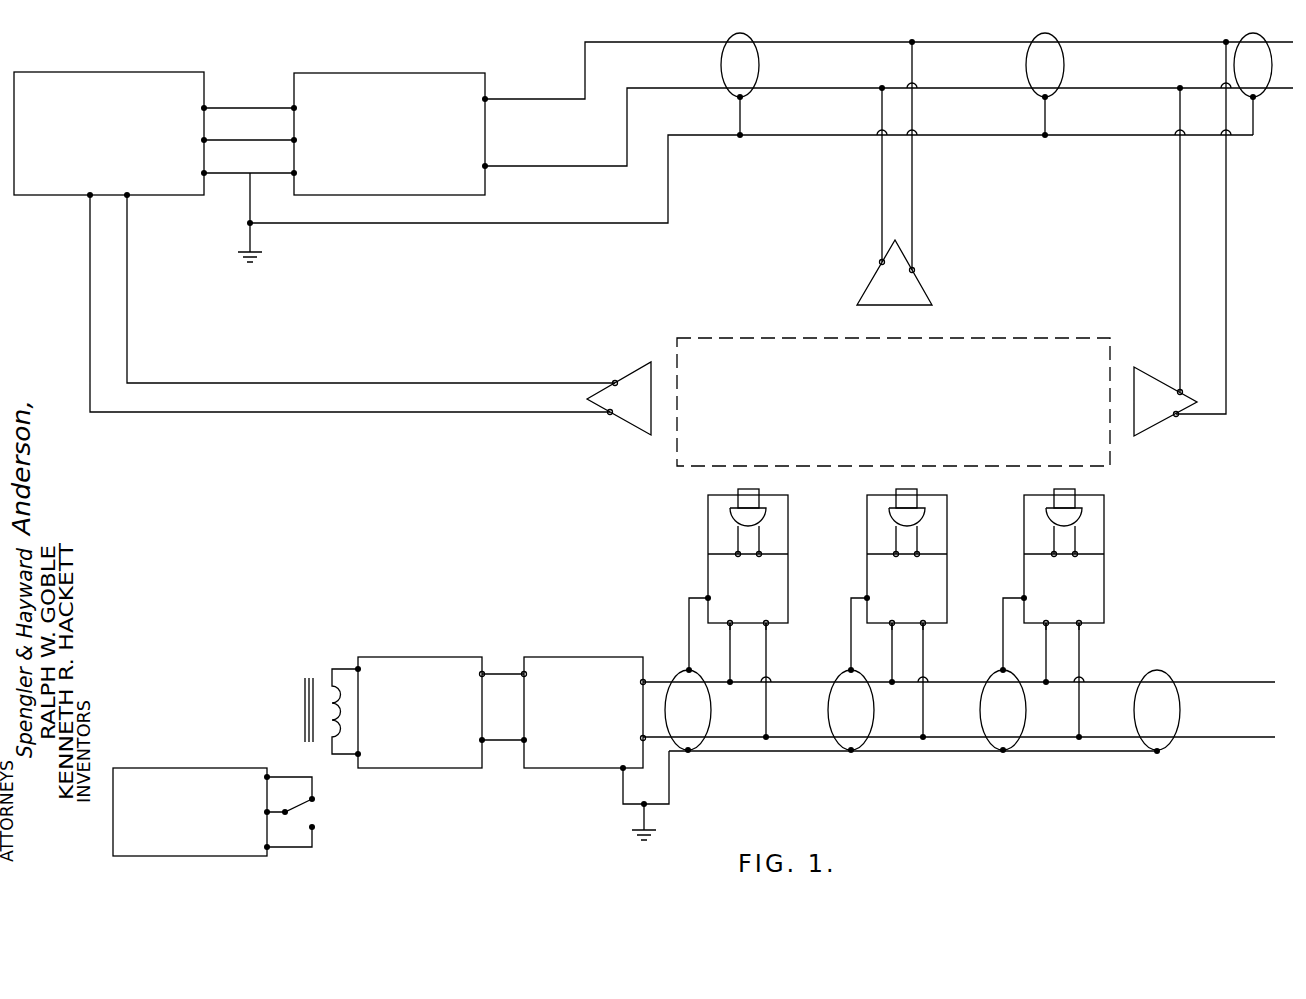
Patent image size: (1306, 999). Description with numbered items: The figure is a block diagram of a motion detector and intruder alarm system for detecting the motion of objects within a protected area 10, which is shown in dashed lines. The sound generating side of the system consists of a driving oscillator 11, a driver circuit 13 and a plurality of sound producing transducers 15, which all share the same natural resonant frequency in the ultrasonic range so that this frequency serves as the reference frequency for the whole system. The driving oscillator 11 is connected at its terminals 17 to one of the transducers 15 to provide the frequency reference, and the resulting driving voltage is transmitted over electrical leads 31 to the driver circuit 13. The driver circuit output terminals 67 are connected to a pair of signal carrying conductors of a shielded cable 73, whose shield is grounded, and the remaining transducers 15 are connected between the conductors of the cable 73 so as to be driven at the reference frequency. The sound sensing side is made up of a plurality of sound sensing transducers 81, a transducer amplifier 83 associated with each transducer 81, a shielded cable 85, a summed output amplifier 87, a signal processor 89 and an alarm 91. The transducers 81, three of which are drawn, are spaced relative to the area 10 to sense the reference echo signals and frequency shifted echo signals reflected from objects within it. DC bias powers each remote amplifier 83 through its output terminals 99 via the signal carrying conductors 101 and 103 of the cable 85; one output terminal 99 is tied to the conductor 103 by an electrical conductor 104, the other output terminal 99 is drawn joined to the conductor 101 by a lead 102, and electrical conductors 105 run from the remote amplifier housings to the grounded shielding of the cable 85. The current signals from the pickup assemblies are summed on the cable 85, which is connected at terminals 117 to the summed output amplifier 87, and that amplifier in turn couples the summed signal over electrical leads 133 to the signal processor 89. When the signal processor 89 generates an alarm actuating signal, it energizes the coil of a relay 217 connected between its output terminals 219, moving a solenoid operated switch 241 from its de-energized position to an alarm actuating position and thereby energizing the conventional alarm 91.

The protected area 10 is at (966, 340).
The driving oscillator 11 is at (136, 72).
The driver circuit 13 is at (393, 73).
The sound producing transducers 15 is at (924, 290).
The terminals 17 is at (124, 198).
The electrical leads 31 is at (240, 107).
The driver circuit output terminals 67 is at (486, 165).
The shielded cable 73 is at (792, 32).
The sound sensing transducers 81 is at (764, 515).
The transducer amplifier 83 is at (778, 588).
The shielded cable 85 is at (955, 772).
The summed output amplifier 87 is at (582, 657).
The signal processor 89 is at (434, 657).
The alarm 91 is at (206, 768).
The output terminals 99 is at (766, 624).
The signal carrying conductor 101 is at (660, 678).
The lead 102 is at (871, 653).
The signal carrying conductor 103 is at (726, 736).
The electrical conductor 104 is at (768, 666).
The electrical conductors 105 is at (687, 616).
The terminals 117 is at (642, 738).
The electrical leads 133 is at (505, 678).
The relay 217 is at (308, 672).
The output terminals 219 is at (358, 752).
The solenoid operated switch 241 is at (322, 812).